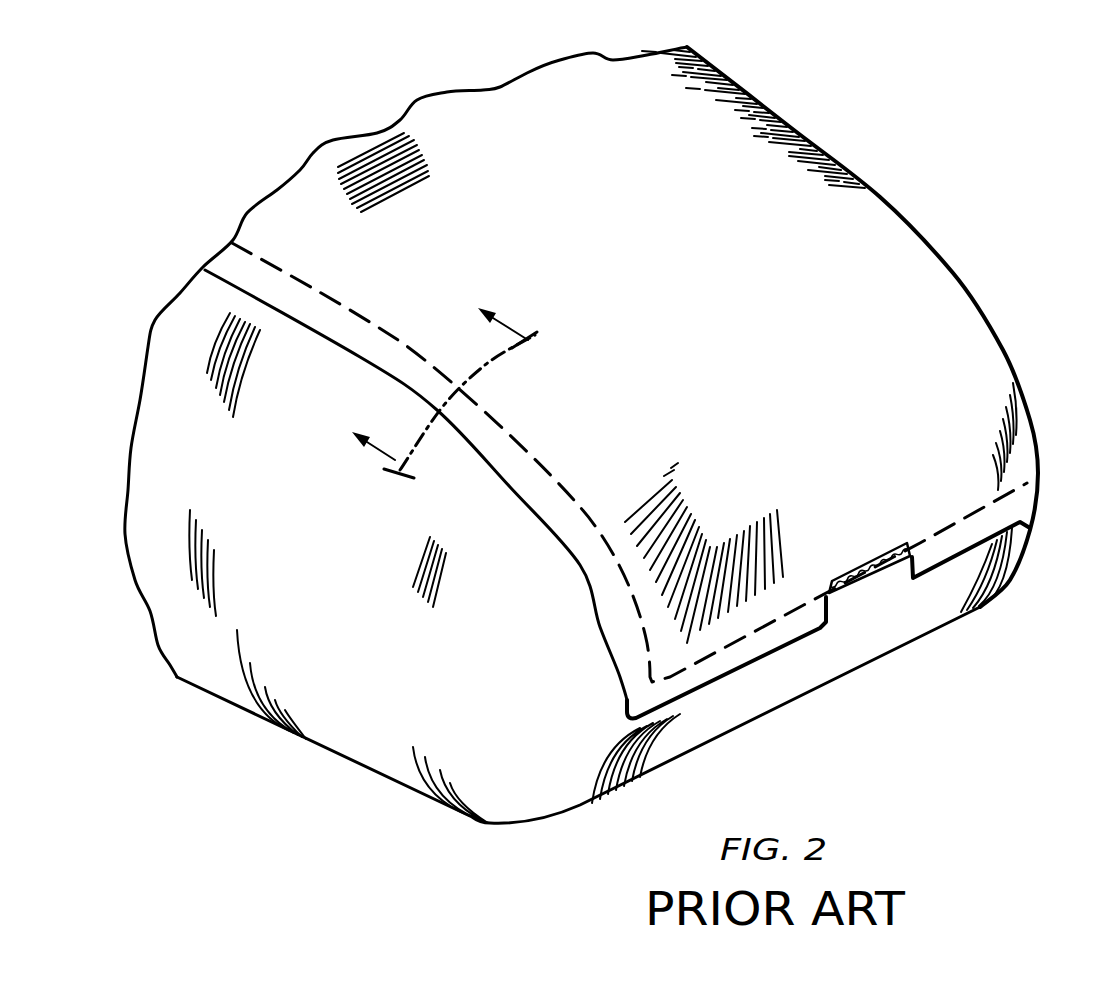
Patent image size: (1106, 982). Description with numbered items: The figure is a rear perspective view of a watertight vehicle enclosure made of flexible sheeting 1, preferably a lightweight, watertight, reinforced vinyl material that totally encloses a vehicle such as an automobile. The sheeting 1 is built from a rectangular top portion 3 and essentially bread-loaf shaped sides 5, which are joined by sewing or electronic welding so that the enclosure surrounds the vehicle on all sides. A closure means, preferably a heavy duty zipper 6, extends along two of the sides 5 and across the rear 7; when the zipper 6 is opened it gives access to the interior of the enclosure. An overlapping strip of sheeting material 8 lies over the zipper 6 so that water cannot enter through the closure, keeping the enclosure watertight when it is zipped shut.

The flexible sheeting 1 is at (300, 168).
The rectangular top portion 3 is at (770, 283).
The sides 5 is at (340, 638).
The zipper 6 is at (860, 580).
The rear 7 is at (867, 493).
The overlapping strip of sheeting material 8 is at (350, 328).